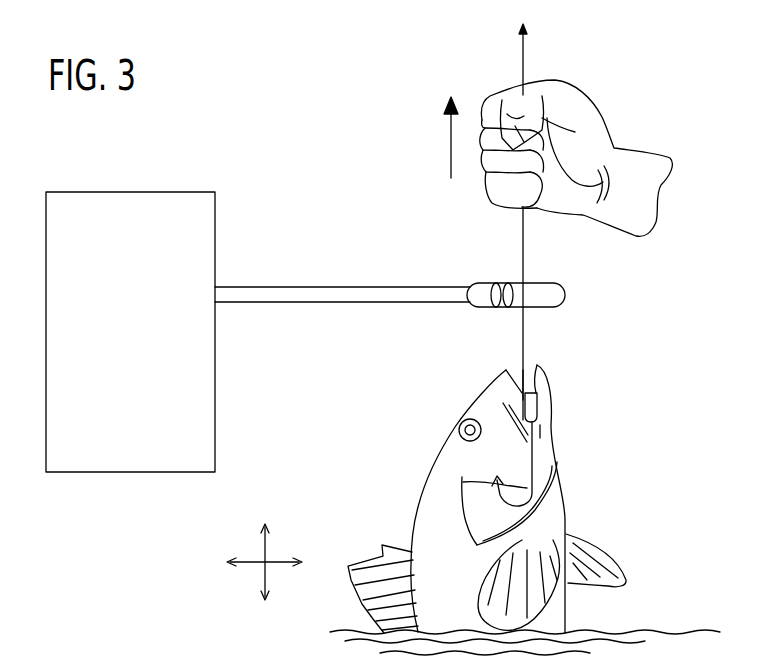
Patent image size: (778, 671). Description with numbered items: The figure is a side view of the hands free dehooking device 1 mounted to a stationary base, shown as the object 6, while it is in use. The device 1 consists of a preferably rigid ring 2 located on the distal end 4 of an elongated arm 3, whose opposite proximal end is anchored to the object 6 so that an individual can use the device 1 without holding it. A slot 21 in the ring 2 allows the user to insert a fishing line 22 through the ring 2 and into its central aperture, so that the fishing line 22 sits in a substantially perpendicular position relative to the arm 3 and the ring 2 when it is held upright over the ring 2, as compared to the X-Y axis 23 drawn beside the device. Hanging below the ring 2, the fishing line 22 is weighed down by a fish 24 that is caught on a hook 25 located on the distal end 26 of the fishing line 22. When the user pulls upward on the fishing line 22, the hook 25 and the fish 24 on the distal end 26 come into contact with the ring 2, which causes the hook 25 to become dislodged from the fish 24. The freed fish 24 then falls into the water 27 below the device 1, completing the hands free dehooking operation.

The hands free dehooking device 1 is at (410, 282).
The ring 2 is at (565, 292).
The elongated arm 3 is at (346, 303).
The distal end 4 is at (462, 303).
The object 6 is at (142, 337).
The slot 21 is at (507, 306).
The fishing line 22 is at (523, 246).
The X-Y axis 23 is at (265, 563).
The fish 24 is at (563, 512).
The hook 25 is at (532, 454).
The distal end 26 is at (522, 393).
The water 27 is at (669, 632).